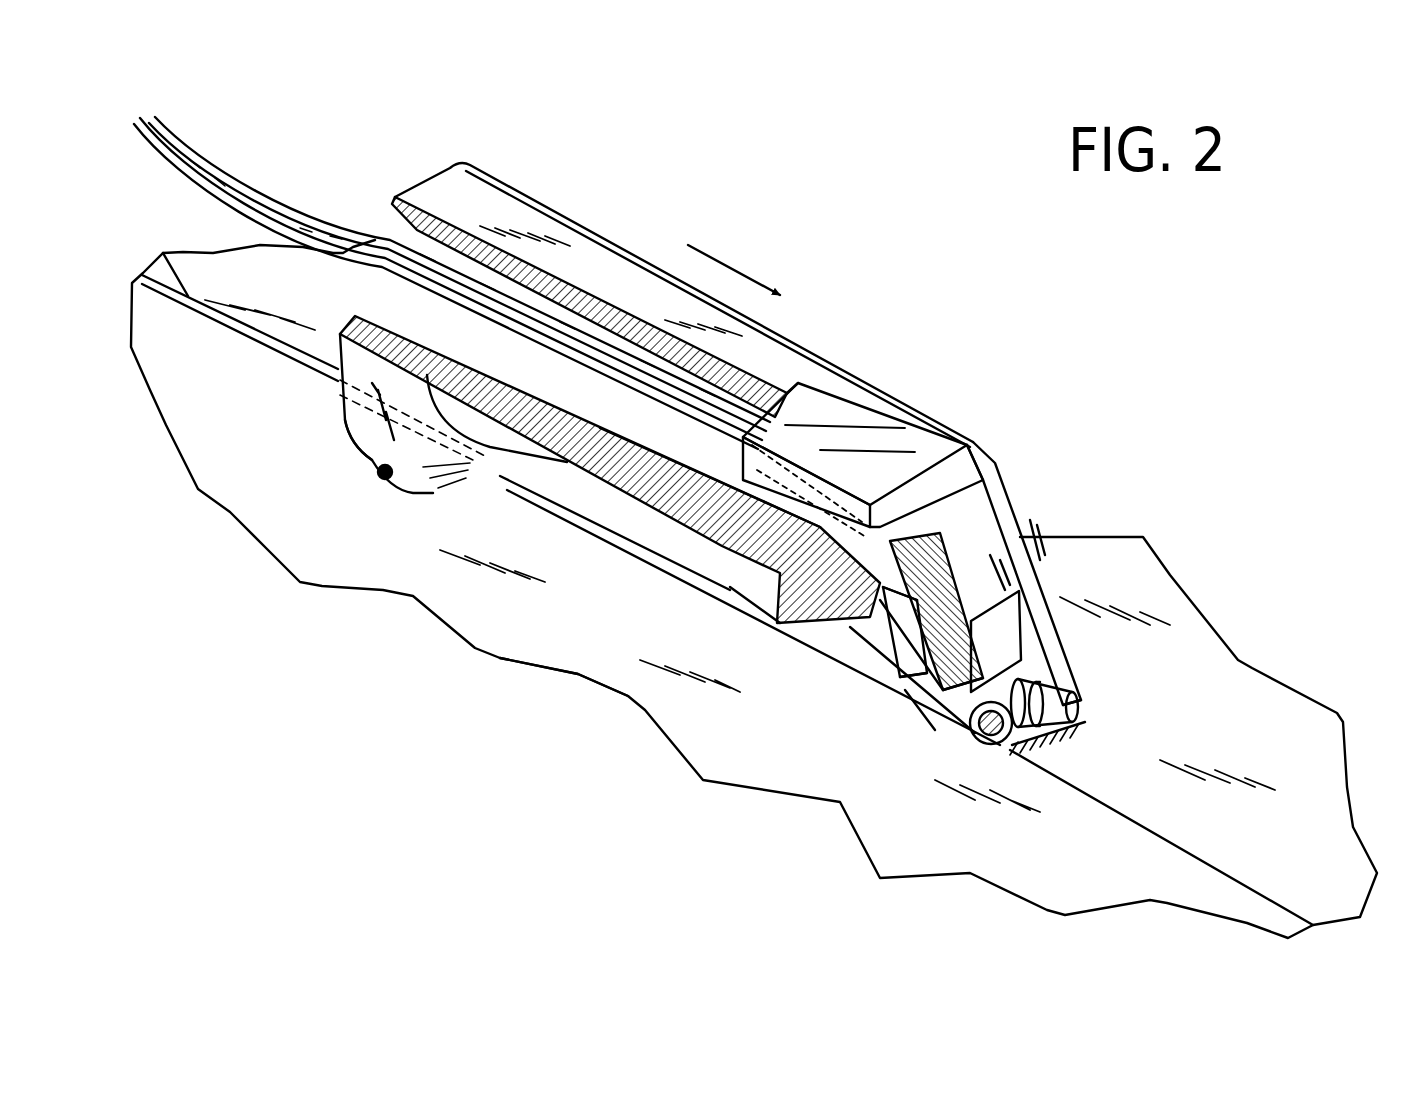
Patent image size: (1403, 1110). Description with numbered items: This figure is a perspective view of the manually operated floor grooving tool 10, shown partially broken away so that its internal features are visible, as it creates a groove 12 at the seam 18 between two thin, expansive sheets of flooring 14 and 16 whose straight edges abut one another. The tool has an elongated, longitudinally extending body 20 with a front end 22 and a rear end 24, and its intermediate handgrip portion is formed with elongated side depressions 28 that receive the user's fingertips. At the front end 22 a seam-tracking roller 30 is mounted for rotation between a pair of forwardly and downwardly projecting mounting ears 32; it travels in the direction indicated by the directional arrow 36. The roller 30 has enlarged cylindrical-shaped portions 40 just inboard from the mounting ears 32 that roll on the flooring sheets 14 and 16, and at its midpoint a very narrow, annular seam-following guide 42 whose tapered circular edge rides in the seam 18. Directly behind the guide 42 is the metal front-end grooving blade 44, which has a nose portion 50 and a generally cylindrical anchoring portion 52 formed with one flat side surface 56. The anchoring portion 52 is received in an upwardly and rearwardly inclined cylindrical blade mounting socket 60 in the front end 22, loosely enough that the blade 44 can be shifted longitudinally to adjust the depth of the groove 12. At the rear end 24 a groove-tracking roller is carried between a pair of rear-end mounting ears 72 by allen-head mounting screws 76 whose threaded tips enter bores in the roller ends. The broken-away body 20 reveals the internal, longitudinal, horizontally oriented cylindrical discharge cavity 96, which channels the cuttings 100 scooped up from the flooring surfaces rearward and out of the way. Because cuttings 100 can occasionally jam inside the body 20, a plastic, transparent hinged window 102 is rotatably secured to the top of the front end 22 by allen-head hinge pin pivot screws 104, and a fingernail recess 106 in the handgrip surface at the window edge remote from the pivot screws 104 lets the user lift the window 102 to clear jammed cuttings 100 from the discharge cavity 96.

The floor grooving tool 10 is at (885, 205).
The groove 12 is at (163, 253).
The sheet of flooring 14 is at (1180, 583).
The sheet of flooring 16 is at (678, 720).
The seam 18 is at (1205, 857).
The body 20 is at (600, 210).
The front end 22 is at (1000, 520).
The rear end 24 is at (472, 192).
The side depressions 28 is at (512, 440).
The seam-tracking roller 30 is at (1012, 745).
The mounting ears 32 is at (1058, 662).
The directional arrow 36 is at (725, 258).
The cylindrical-shaped portions 40 is at (1047, 695).
The seam-following guide 42 is at (1005, 748).
The front-end grooving blade 44 is at (913, 707).
The nose portion 50 is at (957, 727).
The anchoring portion 52 is at (903, 693).
The flat side surface 56 is at (900, 663).
The blade mounting socket 60 is at (883, 620).
The rear-end mounting ears 72 is at (362, 443).
The allen-head mounting screws 76 is at (377, 478).
The discharge cavity 96 is at (655, 427).
The cuttings 100 is at (262, 172).
The hinged window 102 is at (880, 422).
The hinge pin pivot screws 104 is at (752, 516).
The fingernail recess 106 is at (798, 388).